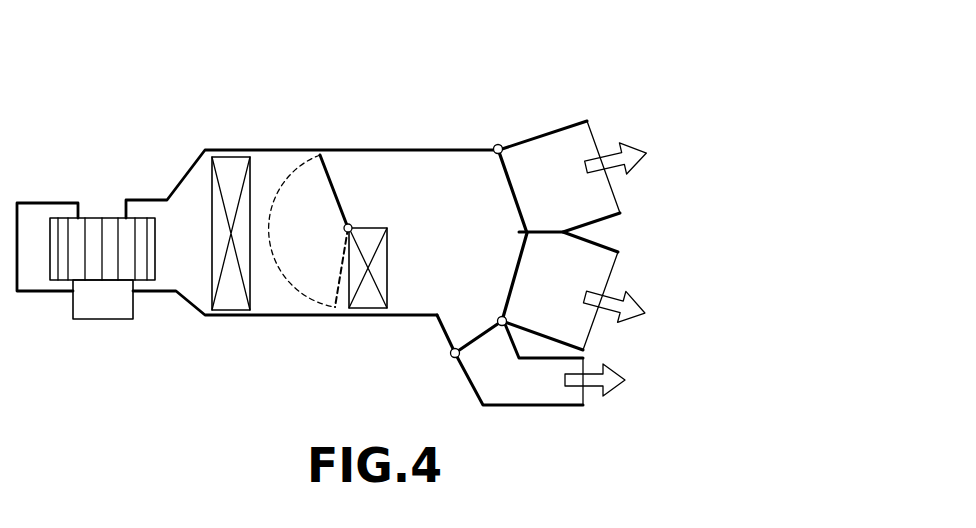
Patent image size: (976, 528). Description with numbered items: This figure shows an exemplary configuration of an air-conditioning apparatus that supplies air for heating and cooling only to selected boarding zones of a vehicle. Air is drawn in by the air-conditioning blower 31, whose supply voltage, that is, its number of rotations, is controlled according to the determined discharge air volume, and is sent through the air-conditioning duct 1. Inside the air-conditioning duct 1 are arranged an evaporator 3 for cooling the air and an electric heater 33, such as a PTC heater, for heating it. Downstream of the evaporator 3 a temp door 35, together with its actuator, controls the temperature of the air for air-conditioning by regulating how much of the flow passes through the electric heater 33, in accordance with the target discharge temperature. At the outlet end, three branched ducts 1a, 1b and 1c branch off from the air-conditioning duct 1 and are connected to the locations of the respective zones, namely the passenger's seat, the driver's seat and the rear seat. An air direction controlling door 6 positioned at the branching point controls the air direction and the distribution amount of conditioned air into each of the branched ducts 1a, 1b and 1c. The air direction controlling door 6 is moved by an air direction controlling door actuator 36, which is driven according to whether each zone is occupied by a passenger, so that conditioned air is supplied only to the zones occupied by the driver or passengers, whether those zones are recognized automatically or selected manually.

The air-conditioning duct 1 is at (280, 150).
The branched duct 1a is at (463, 197).
The branched duct 1b is at (480, 247).
The branched duct 1c is at (460, 291).
The evaporator 3 is at (230, 160).
The air direction controlling door 6 is at (513, 188).
The air-conditioning blower 31 is at (95, 218).
The electric heater 33 is at (390, 243).
The temp door 35 is at (333, 178).
The air direction controlling door actuator 36 is at (495, 147).